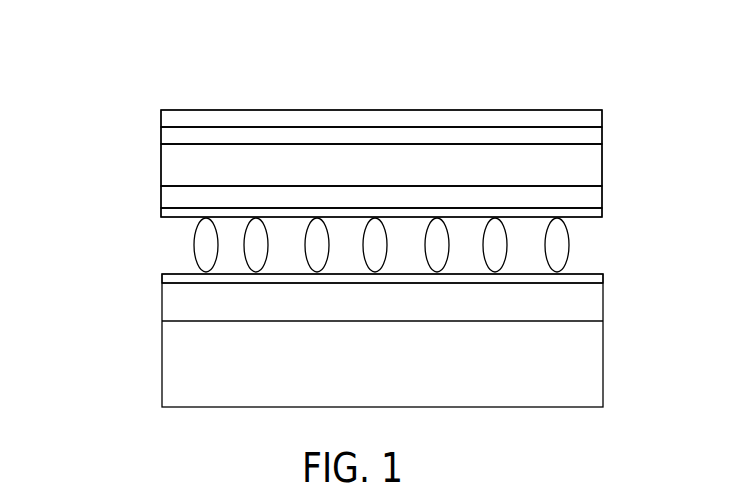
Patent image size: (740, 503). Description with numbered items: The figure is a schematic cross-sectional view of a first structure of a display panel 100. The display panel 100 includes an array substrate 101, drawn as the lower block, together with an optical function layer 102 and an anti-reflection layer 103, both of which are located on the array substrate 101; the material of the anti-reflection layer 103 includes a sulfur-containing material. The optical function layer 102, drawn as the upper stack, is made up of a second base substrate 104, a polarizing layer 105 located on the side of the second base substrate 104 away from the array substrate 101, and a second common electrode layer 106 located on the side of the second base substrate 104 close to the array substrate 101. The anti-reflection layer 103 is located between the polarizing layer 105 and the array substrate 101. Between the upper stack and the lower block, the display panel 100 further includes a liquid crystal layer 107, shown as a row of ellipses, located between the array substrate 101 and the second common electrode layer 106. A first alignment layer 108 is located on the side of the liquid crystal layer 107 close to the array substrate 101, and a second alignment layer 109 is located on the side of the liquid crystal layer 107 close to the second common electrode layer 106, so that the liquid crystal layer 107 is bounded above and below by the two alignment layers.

The display panel 100 is at (128, 44).
The array substrate 101 is at (114, 287).
The optical function layer 102 is at (88, 107).
The anti-reflection layer 103 is at (575, 136).
The second base substrate 104 is at (203, 165).
The polarizing layer 105 is at (203, 120).
The second common electrode layer 106 is at (203, 200).
The liquid crystal layer 107 is at (155, 219).
The first alignment layer 108 is at (575, 278).
The second alignment layer 109 is at (575, 212).